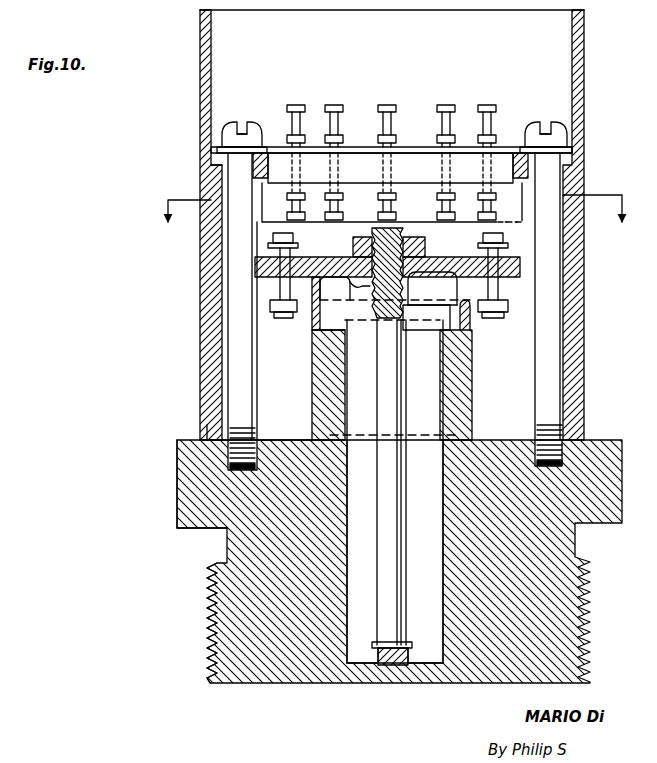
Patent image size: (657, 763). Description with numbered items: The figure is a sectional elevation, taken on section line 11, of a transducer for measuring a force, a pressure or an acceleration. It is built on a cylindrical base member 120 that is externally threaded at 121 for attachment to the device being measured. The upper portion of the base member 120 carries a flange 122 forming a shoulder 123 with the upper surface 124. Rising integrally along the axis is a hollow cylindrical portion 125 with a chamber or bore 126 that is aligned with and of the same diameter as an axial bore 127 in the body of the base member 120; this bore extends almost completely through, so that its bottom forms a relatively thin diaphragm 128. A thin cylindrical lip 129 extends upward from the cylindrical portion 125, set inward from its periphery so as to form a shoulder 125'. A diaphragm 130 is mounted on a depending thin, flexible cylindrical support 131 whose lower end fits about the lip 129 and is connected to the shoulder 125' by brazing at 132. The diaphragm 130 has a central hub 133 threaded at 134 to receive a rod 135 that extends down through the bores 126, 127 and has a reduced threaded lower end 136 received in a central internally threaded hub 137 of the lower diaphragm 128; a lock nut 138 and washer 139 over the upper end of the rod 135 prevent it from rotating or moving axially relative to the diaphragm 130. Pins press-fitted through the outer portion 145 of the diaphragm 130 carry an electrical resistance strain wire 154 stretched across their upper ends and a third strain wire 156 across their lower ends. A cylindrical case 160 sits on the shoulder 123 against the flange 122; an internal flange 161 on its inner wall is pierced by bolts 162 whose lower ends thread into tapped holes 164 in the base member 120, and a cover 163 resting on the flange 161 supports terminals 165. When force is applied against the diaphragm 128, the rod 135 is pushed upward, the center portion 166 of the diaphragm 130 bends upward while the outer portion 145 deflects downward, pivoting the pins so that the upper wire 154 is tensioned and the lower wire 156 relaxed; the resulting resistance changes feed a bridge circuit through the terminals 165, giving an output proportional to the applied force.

The section line 11— 11 is at (182, 249).
The cylindrical base member 120 is at (176, 455).
The external threads 121 is at (207, 598).
The flange 122 is at (179, 497).
The shoulder 123 is at (213, 438).
The upper surface 124 is at (294, 434).
The hollow cylindrical portion 125 is at (303, 385).
The shoulder 125' is at (301, 343).
The chamber or bore 126 is at (437, 353).
The axial bore 127 is at (370, 650).
The diaphragm 128 is at (410, 668).
The cylindrical lip 129 is at (395, 491).
The diaphragm 130 is at (462, 245).
The cylindrical support 131 is at (312, 316).
The brazing 132 is at (466, 327).
The central hub 133 is at (345, 288).
The threads 134 is at (432, 294).
The rod 135 is at (377, 228).
The reduced threaded lower end 136 is at (404, 648).
The central internally threaded hub 137 is at (378, 642).
The lock nut 138 is at (352, 247).
The washer 139 is at (432, 286).
The outer portion 145 is at (510, 278).
The electrical resistance strain wire 154 is at (434, 234).
The third strain wire 156 is at (426, 317).
The cylindrical case 160 is at (205, 172).
The internal flange 161 is at (212, 165).
The bolts 162 is at (246, 124).
The cover 163 is at (487, 168).
The tapped holes 164 is at (233, 450).
The terminals 165 is at (478, 104).
The center portion 166 is at (283, 257).